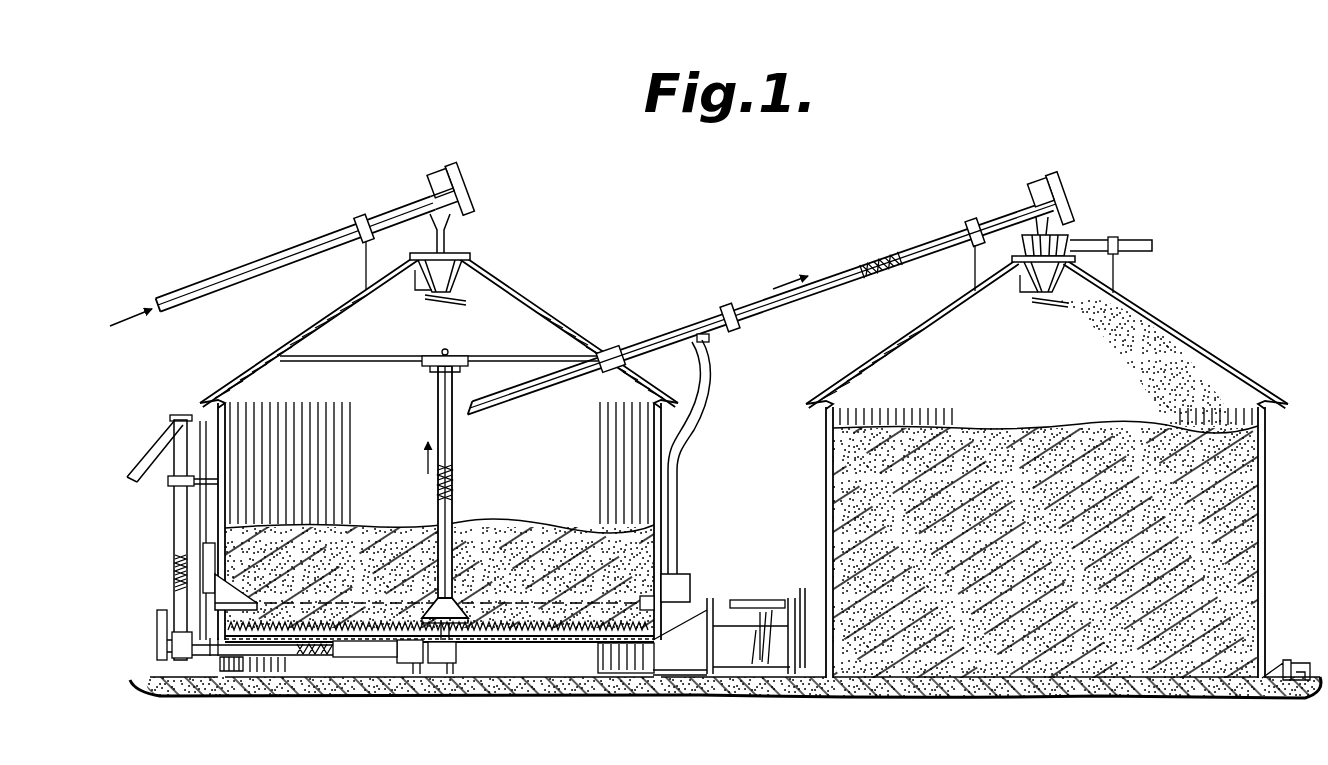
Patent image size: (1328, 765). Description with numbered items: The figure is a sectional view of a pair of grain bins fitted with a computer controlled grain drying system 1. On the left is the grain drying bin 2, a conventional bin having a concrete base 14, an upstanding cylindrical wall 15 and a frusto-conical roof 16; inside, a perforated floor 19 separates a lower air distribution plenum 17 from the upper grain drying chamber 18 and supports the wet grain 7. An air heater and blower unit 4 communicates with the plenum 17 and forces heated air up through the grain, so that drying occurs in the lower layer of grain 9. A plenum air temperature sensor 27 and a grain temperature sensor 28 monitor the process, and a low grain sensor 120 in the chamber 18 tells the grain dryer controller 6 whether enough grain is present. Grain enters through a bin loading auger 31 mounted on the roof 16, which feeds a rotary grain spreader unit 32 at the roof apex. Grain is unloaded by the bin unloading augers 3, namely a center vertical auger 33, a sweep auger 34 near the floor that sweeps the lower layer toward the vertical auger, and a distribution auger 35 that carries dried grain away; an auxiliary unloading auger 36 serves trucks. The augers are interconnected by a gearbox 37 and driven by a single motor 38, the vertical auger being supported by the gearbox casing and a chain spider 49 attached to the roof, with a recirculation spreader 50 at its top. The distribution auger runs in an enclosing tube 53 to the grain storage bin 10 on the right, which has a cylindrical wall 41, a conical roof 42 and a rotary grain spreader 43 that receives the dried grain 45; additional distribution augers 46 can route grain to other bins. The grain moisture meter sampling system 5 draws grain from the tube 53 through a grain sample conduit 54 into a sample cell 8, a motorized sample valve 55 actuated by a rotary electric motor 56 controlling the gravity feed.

The grain drying system 1 is at (320, 145).
The grain drying bin 2 is at (549, 315).
The bin unloading augers 3 is at (434, 407).
The air heater and blower unit 4 is at (753, 599).
The grain moisture meter sampling system 5 is at (699, 388).
The grain dryer controller 6 is at (201, 546).
The wet grain 7 is at (373, 528).
The sample cell 8 is at (678, 574).
The lower layer of grain 9 is at (364, 611).
The grain storage bin 10 is at (1250, 383).
The base 14 is at (326, 690).
The upstanding cylindrical wall 15 is at (203, 411).
The frusto-conical roof 16 is at (319, 325).
The lower air distribution plenum 17 is at (563, 692).
The upper grain drying chamber 18 is at (527, 444).
The perforated floor 19 is at (603, 643).
The plenum air temperature sensor 27 is at (250, 672).
The grain temperature sensor 28 is at (256, 607).
The bin loading auger 31 is at (251, 271).
The rotary grain spreader unit 32 is at (457, 284).
The center vertical auger 33 is at (453, 481).
The sweep auger 34 is at (543, 642).
The distribution auger 35 is at (882, 263).
The auxiliary unloading auger 36 is at (175, 508).
The gearbox 37 is at (445, 665).
The motor 38 is at (196, 605).
The cylindrical wall 41 is at (1268, 500).
The conical roof 42 is at (1168, 326).
The rotary grain spreader 43 is at (1030, 301).
The dried grain 45 is at (1045, 487).
The additional distribution augers 46 is at (1146, 242).
The chain spider 49 is at (392, 356).
The recirculation spreader 50 is at (432, 356).
The enclosing tube 53 is at (828, 291).
The grain sample conduit 54 is at (681, 431).
The motorized sample valve 55 is at (709, 345).
The rotary electric motor 56 is at (742, 331).
The low grain sensor 120 is at (648, 597).